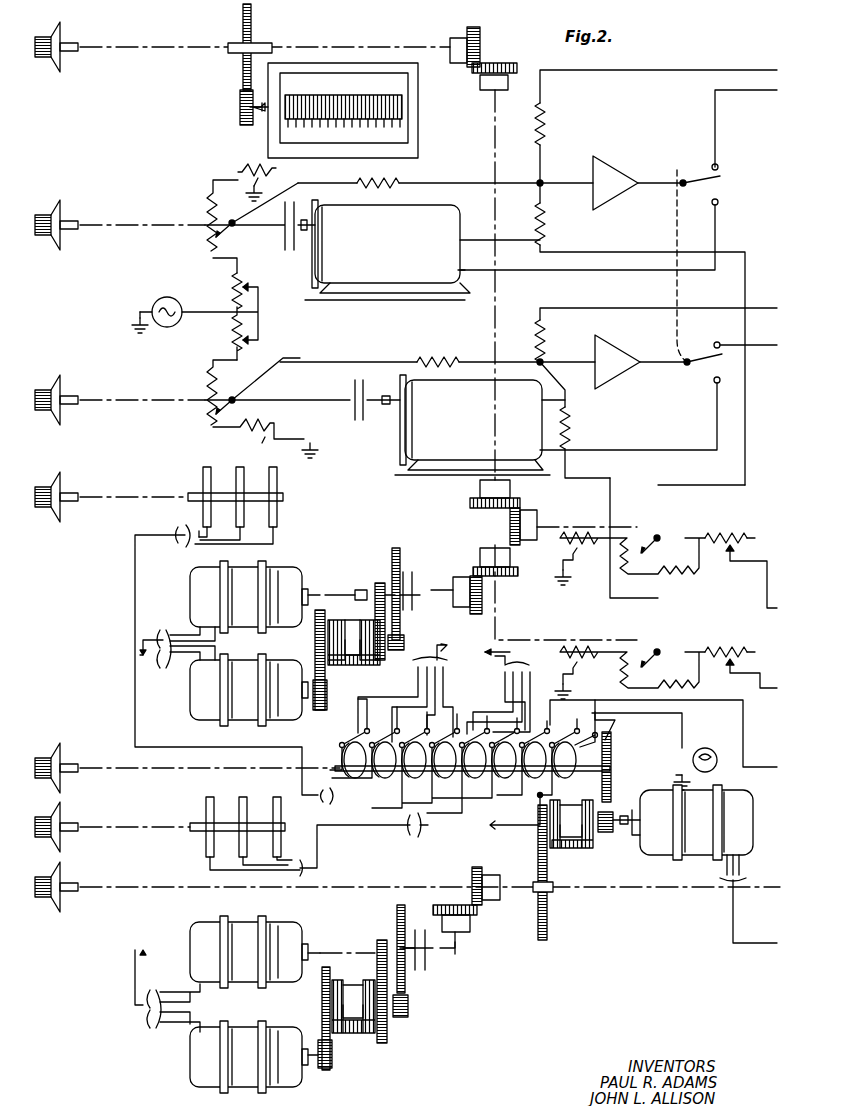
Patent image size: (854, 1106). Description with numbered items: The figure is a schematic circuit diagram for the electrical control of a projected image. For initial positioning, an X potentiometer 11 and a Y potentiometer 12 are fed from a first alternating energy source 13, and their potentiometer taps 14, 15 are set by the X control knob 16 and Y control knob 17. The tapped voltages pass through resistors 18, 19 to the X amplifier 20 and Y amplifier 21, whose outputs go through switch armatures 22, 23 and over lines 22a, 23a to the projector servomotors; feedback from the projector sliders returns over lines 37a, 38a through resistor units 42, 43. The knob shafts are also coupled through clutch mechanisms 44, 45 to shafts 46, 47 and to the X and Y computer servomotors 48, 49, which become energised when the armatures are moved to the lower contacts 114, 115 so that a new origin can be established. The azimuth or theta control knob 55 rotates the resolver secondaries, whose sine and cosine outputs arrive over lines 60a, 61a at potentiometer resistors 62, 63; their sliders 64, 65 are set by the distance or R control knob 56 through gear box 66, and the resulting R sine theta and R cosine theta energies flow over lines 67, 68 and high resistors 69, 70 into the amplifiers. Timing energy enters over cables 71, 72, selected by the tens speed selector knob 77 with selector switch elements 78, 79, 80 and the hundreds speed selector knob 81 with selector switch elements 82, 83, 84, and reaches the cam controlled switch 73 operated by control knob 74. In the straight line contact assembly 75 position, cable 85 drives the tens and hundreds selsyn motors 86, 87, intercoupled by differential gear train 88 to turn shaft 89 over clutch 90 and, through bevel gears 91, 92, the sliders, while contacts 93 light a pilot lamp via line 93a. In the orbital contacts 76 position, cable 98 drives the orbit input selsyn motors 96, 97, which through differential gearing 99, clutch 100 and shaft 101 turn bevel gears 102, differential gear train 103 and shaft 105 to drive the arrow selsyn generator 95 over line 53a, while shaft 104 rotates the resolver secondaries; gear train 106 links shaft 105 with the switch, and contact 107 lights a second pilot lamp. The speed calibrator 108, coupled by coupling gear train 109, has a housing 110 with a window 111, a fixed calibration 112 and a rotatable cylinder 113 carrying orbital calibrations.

The distance or R control knob 56 is at (40, 40).
The coupling gear train 109 is at (240, 93).
The housing 110 is at (268, 143).
The rotatable cylinder 113 is at (408, 78).
The window 111 is at (402, 100).
The fixed calibration 112 is at (405, 125).
The speed calibrator 108 is at (418, 150).
The gear box 66 is at (483, 62).
The line 37a is at (700, 70).
The line 22a is at (746, 91).
The resistor unit 42 is at (545, 125).
The high resistor 69 is at (545, 220).
The X amplifier 20 is at (612, 195).
The switch armature 22 is at (700, 192).
The lower contact 114 is at (718, 205).
The resistor 18 is at (385, 185).
The X control knob 16 is at (40, 218).
The X potentiometer 11 is at (205, 252).
The potentiometer tap 14 is at (232, 238).
The first alternating energy source 13 is at (175, 322).
The clutch mechanism 44 is at (290, 206).
The shaft 46 is at (301, 233).
The X computer servomotor 48 is at (442, 215).
The line 38a is at (757, 304).
The resistor unit 43 is at (545, 336).
The line 23a is at (758, 345).
The Y amplifier 21 is at (613, 374).
The switch armature 23 is at (702, 370).
The lower contact 115 is at (720, 385).
The high resistor 70 is at (570, 420).
The line 67 is at (745, 446).
The line 68 is at (610, 490).
The Y control knob 17 is at (40, 393).
The Y potentiometer 12 is at (205, 415).
The potentiometer tap 15 is at (232, 415).
The resistor 19 is at (439, 360).
The clutch mechanism 45 is at (368, 384).
The shaft 47 is at (387, 408).
The Y computer servomotor 49 is at (519, 388).
The hundreds speed selector knob 81 is at (40, 491).
The selector switch element 82 is at (203, 472).
The selector switch element 83 is at (238, 472).
The selector switch element 84 is at (273, 472).
The cable 72 is at (188, 545).
The hundreds selsyn motor 87 is at (190, 587).
The tens selsyn motor 86 is at (191, 706).
The cable 85 is at (175, 663).
The differential gear train 88 is at (383, 664).
The clutch 90 is at (410, 574).
The shaft 89 is at (433, 593).
The bevel gear 91 is at (518, 510).
The bevel gear 92 is at (472, 570).
The slider 64 is at (660, 548).
The potentiometer resistor 62 is at (685, 568).
The line 60a is at (767, 608).
The slider 65 is at (660, 662).
The potentiometer resistor 63 is at (685, 680).
The line 61a is at (760, 688).
The cable 98 is at (525, 655).
The control knob 74 is at (40, 760).
The cam controlled switch 73 is at (360, 748).
The straight line contact assembly 75 is at (366, 730).
The orbital contacts 76 is at (544, 716).
The contacts 93 is at (576, 733).
The line 93a is at (743, 740).
The contact 107 is at (596, 742).
The gear train 106 is at (612, 775).
The shaft 105 is at (622, 835).
The differential gear train 103 is at (567, 853).
The arrow selsyn generator 95 is at (742, 803).
The shaft 104 is at (749, 883).
The line 53a is at (753, 947).
The tens speed selector knob 77 is at (40, 819).
The selector switch element 78 is at (210, 803).
The selector switch element 79 is at (243, 803).
The selector switch element 80 is at (277, 803).
The cable 71 is at (422, 832).
The azimuth or theta control knob 55 is at (40, 880).
The bevel gears 102 is at (480, 914).
The shaft 101 is at (455, 950).
The clutch 100 is at (427, 970).
The orbit input selsyn motor 97 is at (292, 930).
The differential gearing 99 is at (388, 1032).
The orbit input selsyn motor 96 is at (290, 1075).